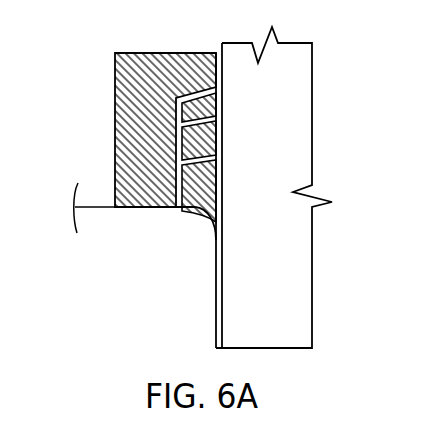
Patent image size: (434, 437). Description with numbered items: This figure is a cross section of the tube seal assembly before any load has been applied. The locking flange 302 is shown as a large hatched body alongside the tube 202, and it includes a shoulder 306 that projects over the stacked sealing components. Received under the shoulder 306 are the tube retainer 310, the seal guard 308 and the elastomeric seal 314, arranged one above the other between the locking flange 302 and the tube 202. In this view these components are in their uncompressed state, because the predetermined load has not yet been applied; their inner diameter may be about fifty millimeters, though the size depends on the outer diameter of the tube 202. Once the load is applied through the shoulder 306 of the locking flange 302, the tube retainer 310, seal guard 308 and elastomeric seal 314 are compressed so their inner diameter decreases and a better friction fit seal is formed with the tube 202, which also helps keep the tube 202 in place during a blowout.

The tube 202 is at (295, 281).
The locking flange 302 is at (115, 106).
The shoulder 306 is at (214, 106).
The seal guard 308 is at (208, 141).
The tube retainer 310 is at (212, 116).
The elastomeric seal 314 is at (210, 190).